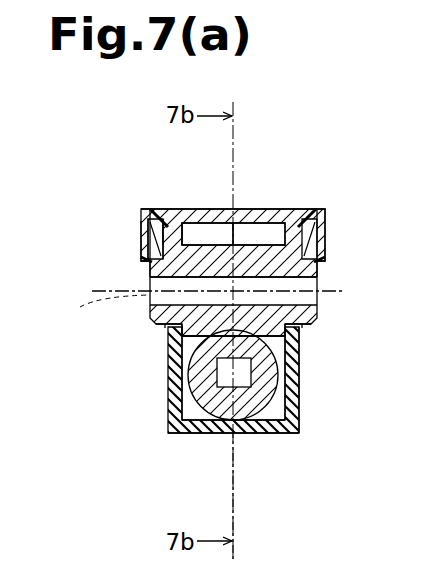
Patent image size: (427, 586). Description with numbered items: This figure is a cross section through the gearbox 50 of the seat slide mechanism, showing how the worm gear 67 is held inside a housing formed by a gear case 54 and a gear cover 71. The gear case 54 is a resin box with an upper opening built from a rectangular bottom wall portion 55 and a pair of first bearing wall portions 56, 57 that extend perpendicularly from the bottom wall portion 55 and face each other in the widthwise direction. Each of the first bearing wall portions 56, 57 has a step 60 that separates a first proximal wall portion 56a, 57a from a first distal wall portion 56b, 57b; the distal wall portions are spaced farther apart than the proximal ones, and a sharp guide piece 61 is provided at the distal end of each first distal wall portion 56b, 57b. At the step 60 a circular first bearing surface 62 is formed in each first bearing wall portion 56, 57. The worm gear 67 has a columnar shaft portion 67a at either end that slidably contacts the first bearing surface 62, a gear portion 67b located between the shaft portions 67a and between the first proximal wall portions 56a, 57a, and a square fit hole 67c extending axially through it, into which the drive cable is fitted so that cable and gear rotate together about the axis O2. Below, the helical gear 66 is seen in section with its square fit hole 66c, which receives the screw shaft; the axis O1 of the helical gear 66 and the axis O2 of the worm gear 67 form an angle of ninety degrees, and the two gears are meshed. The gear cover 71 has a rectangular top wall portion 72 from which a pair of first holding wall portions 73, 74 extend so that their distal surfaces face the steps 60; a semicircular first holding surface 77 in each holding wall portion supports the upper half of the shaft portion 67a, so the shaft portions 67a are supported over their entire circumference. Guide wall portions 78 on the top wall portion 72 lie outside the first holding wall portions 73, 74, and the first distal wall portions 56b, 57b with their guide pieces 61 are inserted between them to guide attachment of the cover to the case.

The gearbox 50 is at (363, 126).
The worm gear 67 is at (272, 212).
The first holding wall portion 73 is at (323, 212).
The guide piece 61 is at (156, 222).
The guide wall portion 78 is at (150, 212).
The first holding wall portion 74 is at (150, 238).
The first distal wall portion 57b is at (150, 252).
The first distal wall portion 56b is at (320, 250).
The first holding surface 77 is at (148, 265).
The gear portion 67b is at (192, 238).
The gear cover 71 is at (204, 209).
The top wall portion 72 is at (248, 209).
The fit hole 67c is at (290, 277).
The axis of the worm gear O2 is at (112, 291).
The step 60 is at (98, 310).
The first bearing surface 62 is at (165, 325).
The shaft portion 67a is at (165, 330).
The first bearing wall portion 57 is at (170, 407).
The first proximal wall portion 57a is at (170, 355).
The first proximal wall portion 56a is at (297, 355).
The first bearing wall portion 56 is at (299, 405).
The gear case 54 is at (190, 434).
The bottom wall portion 55 is at (281, 434).
The axis of the helical gear O1 is at (178, 435).
The helical gear 66 is at (299, 428).
The fit hole 66c is at (243, 387).